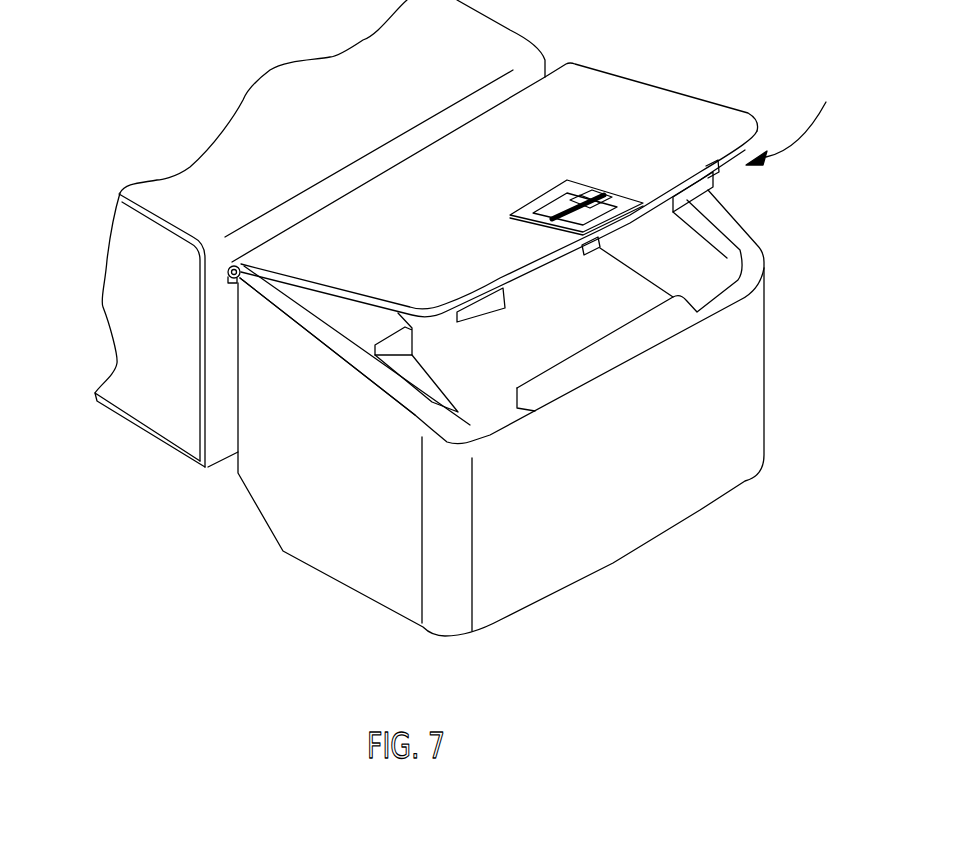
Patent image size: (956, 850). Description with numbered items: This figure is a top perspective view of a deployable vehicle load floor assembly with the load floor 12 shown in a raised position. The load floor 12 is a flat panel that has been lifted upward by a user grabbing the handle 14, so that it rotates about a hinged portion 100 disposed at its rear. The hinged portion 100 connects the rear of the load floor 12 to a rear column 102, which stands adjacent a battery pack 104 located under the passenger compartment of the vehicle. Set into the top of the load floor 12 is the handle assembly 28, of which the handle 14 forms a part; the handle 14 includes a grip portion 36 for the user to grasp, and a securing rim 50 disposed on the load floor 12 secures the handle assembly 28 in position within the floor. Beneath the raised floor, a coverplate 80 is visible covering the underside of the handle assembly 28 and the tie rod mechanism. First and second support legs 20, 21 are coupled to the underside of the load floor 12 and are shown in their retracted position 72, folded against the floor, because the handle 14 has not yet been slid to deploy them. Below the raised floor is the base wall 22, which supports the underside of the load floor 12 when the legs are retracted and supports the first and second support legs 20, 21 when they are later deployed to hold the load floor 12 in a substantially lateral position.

The load floor 12 is at (698, 117).
The handle 14 is at (587, 200).
The first support leg 20 is at (478, 323).
The second support leg 21 is at (715, 183).
The base wall 22 is at (643, 471).
The handle assembly 28 is at (580, 197).
The grip portion 36 is at (585, 216).
The securing rim 50 is at (620, 197).
The retracted position 72 is at (792, 118).
The coverplate 80 is at (583, 255).
The hinged portion 100 is at (228, 282).
The rear column 102 is at (220, 353).
The battery pack 104 is at (127, 325).